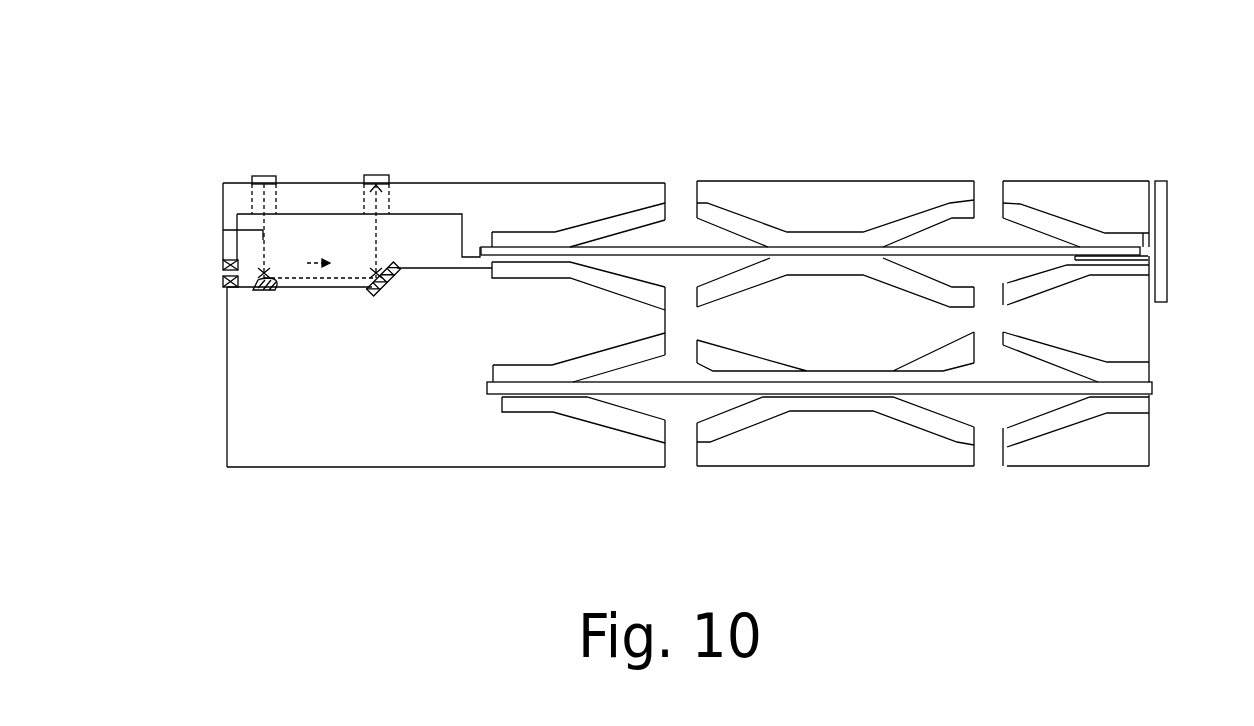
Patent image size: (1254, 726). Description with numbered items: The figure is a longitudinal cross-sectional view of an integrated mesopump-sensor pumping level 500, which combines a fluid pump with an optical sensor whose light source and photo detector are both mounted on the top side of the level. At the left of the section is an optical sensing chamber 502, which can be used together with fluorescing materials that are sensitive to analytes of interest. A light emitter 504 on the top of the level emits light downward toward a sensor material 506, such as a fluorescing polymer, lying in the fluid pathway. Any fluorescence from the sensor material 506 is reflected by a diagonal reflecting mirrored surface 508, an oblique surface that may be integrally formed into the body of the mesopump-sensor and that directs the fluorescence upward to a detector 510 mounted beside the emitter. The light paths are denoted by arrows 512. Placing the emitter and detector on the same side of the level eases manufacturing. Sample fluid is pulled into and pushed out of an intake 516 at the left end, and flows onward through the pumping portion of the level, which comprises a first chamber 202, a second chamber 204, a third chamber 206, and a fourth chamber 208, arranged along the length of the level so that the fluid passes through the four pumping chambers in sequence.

The integrated mesopump-sensor pumping level 500 is at (1000, 122).
The optical sensing chamber 502 is at (308, 234).
The light emitter 504 is at (261, 176).
The sensor material 506 is at (260, 292).
The diagonal reflecting mirrored surface 508 is at (398, 290).
The detector 510 is at (375, 175).
The arrows 512 is at (237, 232).
The intake 516 is at (222, 276).
The first chamber 202 is at (655, 235).
The second chamber 204 is at (635, 400).
The third chamber 206 is at (1012, 410).
The fourth chamber 208 is at (1000, 233).